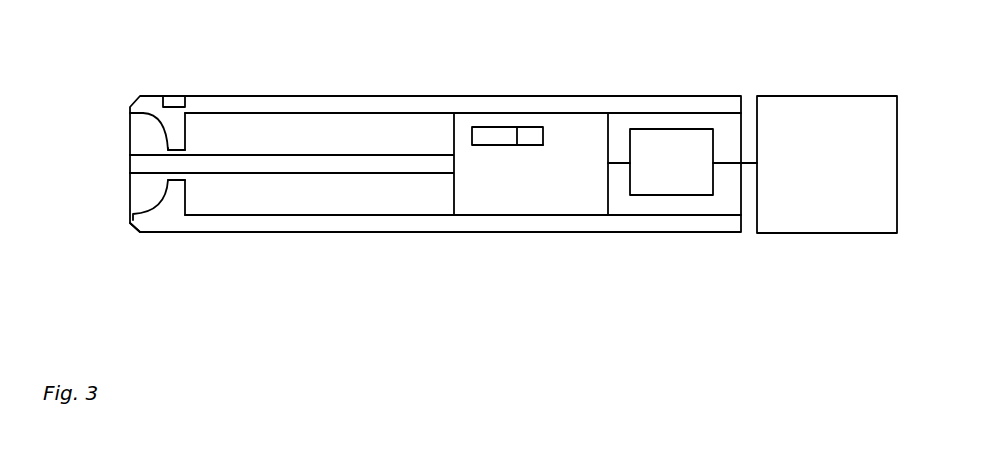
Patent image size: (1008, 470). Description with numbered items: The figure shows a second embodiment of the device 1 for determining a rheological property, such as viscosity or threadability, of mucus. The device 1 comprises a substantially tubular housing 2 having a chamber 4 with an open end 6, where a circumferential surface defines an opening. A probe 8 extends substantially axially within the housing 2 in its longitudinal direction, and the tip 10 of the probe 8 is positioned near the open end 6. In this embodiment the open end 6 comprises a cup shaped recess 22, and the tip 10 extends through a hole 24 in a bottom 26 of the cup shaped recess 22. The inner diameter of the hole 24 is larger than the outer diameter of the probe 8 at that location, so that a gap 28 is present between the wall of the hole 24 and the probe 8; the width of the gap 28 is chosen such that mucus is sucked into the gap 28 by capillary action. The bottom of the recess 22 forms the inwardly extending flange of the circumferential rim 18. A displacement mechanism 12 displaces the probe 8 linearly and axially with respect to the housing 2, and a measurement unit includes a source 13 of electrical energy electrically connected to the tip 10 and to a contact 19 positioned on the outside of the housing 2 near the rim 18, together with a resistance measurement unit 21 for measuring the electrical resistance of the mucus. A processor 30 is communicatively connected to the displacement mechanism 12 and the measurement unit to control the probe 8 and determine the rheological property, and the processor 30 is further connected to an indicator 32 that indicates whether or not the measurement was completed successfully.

The device 1 is at (742, 299).
The housing 2 is at (410, 222).
The chamber 4 is at (343, 198).
The open end 6 is at (114, 141).
The probe 8 is at (278, 165).
The tip 10 is at (138, 164).
The displacement mechanism 12 is at (514, 202).
The source of electrical energy 13 is at (498, 133).
The rim 18 is at (130, 105).
The contact 19 is at (175, 103).
The resistance measurement unit 21 is at (535, 132).
The cup shaped recess 22 is at (142, 195).
The hole 24 is at (196, 147).
The bottom 26 is at (166, 182).
The gap 28 is at (195, 179).
The processor 30 is at (667, 185).
The indicator 32 is at (795, 222).